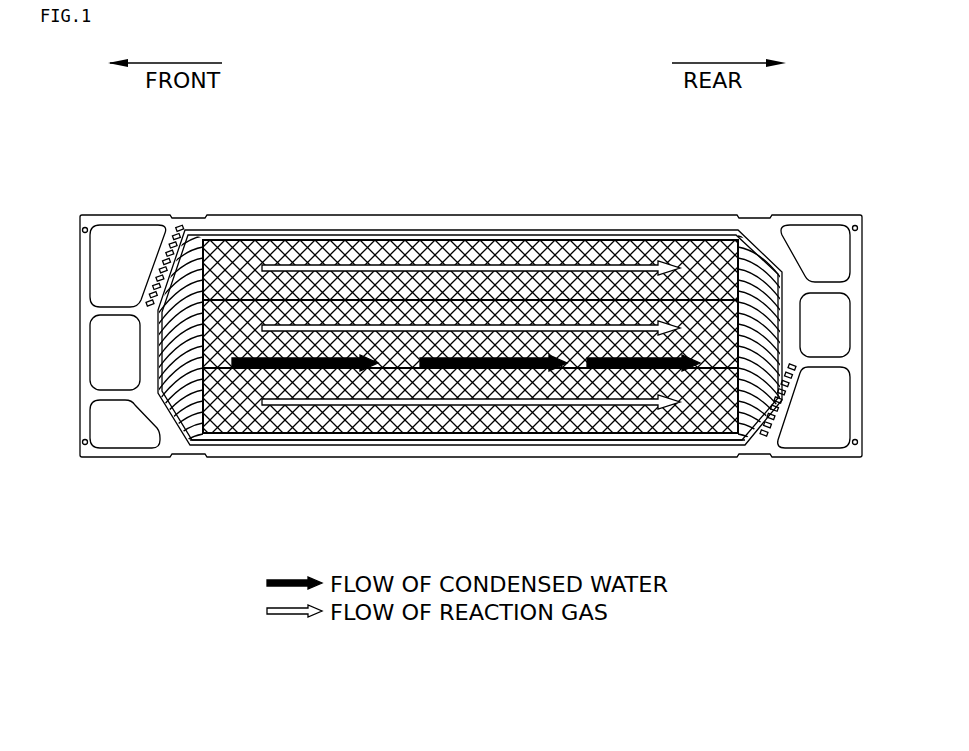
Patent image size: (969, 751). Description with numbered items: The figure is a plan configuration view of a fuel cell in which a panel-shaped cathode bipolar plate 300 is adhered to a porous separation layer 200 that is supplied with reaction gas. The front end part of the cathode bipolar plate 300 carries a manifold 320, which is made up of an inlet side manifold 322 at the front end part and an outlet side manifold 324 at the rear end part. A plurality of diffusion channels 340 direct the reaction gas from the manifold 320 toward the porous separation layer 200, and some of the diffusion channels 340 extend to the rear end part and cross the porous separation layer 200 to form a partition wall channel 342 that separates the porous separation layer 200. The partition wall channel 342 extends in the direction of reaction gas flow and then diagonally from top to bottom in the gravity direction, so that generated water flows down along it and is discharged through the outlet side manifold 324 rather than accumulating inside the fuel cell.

The porous separation layer 200 is at (598, 250).
The cathode bipolar plate 300 is at (212, 392).
The manifold 320 is at (103, 219).
The inlet side manifold 322 is at (150, 267).
The outlet side manifold 324 is at (793, 400).
The diffusion channels 340 is at (183, 428).
The partition wall channel 342 is at (687, 275).